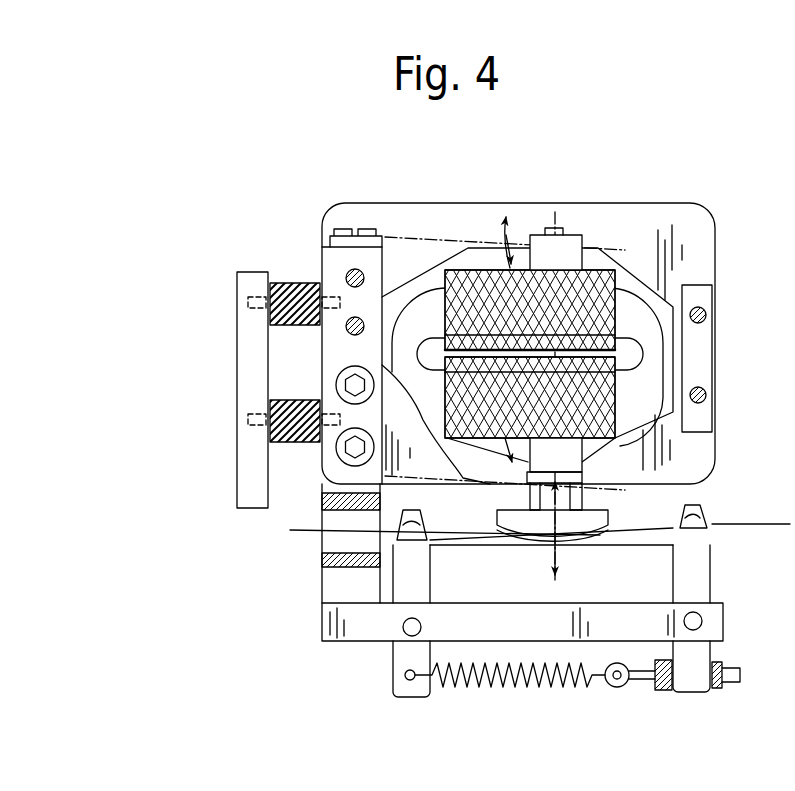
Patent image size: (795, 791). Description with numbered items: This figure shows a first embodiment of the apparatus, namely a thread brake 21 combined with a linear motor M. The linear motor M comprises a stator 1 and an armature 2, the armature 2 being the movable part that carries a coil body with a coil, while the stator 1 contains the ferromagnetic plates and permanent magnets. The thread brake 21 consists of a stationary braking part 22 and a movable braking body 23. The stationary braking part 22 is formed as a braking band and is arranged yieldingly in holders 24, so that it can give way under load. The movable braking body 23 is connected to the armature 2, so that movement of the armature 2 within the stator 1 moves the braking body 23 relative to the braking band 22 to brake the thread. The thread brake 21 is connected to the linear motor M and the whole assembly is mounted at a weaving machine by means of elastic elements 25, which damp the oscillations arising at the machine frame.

The stator 1 is at (630, 188).
The linear motor M is at (704, 184).
The armature 2 is at (637, 288).
The elastic elements 25 is at (280, 287).
The movable braking body 23 is at (603, 510).
The stationary braking part 22 is at (635, 540).
The holders 24 is at (698, 563).
The thread brake 21 is at (340, 693).